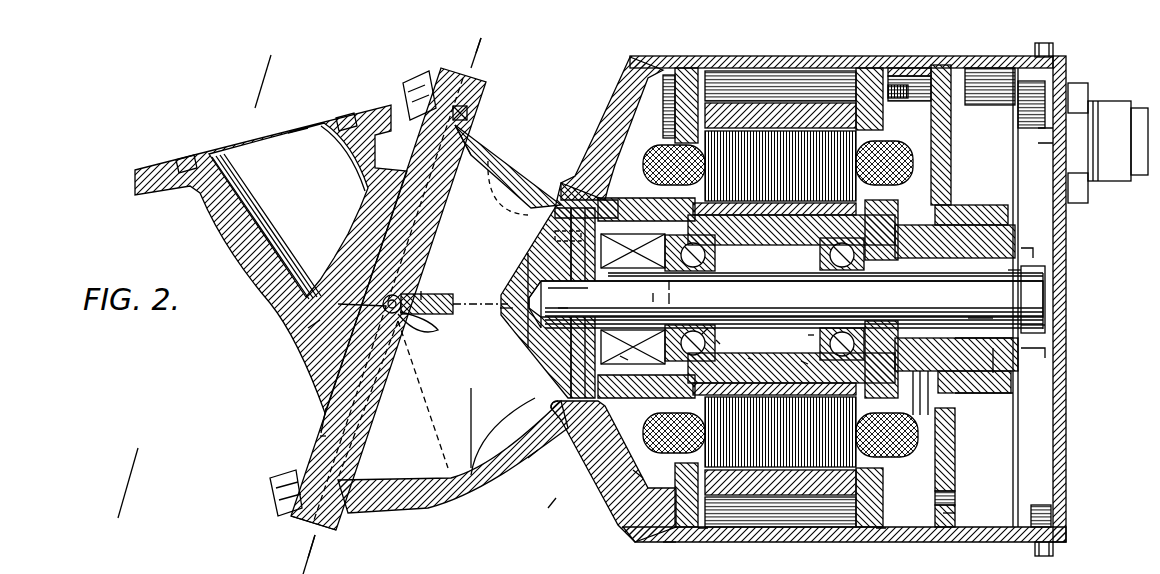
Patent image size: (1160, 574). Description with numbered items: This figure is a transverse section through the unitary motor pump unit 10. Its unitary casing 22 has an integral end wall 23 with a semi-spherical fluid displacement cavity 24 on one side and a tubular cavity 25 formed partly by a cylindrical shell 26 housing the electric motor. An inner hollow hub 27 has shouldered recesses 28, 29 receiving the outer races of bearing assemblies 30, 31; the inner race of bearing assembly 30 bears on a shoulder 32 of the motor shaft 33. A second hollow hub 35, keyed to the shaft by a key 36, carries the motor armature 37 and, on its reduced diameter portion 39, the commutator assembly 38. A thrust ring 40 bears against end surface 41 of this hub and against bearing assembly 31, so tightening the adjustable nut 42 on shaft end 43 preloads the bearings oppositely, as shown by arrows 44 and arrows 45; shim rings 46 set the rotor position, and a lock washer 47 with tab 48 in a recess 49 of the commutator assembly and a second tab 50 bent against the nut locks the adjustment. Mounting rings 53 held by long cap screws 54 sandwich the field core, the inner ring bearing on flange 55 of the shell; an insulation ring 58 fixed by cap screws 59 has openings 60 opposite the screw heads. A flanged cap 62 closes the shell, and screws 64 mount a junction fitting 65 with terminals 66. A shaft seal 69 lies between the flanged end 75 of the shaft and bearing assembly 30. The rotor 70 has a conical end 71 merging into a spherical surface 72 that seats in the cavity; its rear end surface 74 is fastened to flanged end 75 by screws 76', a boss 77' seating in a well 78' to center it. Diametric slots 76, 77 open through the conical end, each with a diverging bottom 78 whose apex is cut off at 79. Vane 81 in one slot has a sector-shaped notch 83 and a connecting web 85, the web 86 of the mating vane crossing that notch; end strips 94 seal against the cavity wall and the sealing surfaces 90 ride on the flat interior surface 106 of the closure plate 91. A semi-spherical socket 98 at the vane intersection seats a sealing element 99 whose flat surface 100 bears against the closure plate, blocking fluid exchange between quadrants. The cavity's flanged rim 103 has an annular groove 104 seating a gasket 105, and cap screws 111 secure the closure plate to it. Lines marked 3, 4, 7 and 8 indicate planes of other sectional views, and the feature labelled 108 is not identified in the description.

The section line 3- 3 is at (253, 58).
The section line 4- 4 is at (413, 292).
The section line 7- 7 is at (477, 45).
The section line 8- 8 is at (460, 50).
The unitary motor pump unit 10 is at (540, 507).
The unitary casing 22 is at (605, 496).
The end wall 23 is at (560, 413).
The semi-spherical fluid displacement cavity 24 is at (520, 450).
The tubular cavity 25 is at (630, 467).
The cylindrical shell 26 is at (780, 527).
The inner hollow hub 27 is at (750, 352).
The shouldered recess 28 is at (728, 340).
The shouldered recess 29 is at (794, 356).
The anti-friction bearing assembly 30 is at (667, 365).
The anti-friction bearing assembly 31 is at (798, 328).
The shoulder 32 is at (662, 277).
The motor shaft 33 is at (786, 301).
The second hollow hub 35 is at (802, 237).
The key 36 is at (960, 272).
The motor armature 37 is at (910, 447).
The motor commutator assembly 38 is at (984, 388).
The reduced diameter portion 39 is at (968, 312).
The thrust ring 40 is at (856, 317).
The end surface 41 is at (858, 376).
The adjustable nut 42 is at (1038, 317).
The shaft end 43 is at (1040, 291).
The arrows 44 is at (829, 260).
The arrows 45 is at (688, 335).
The shim rings 46 is at (662, 291).
The lock washer 47 is at (1013, 262).
The tab 48 is at (1038, 350).
The recess 49 is at (987, 347).
The second tab 50 is at (1027, 240).
The mounting rings 53 is at (690, 520).
The long cap screws 54 is at (750, 507).
The inwardly extending flange 55 is at (660, 535).
The insulation ring 58 is at (935, 131).
The cap screws 59 is at (908, 77).
The openings 60 is at (938, 505).
The flanged cap 62 is at (1060, 449).
The screws 64 is at (1082, 84).
The junction fitting 65 is at (1046, 39).
The terminals 66 is at (1030, 123).
The shaft seal 69 is at (660, 354).
The rotor 70 is at (513, 440).
The conical end 71 is at (428, 432).
The spherical surface 72 is at (480, 136).
The rear end surface 74 is at (543, 343).
The flanged end 75 is at (597, 188).
The diametric slot 76 is at (503, 436).
The screws 76' is at (633, 299).
The diametric slot 77 is at (520, 303).
The boss 77' is at (584, 285).
The slot bottom 78 is at (527, 303).
The well 78' is at (589, 303).
The cut-off apex 79 is at (492, 300).
The vane 81 is at (522, 178).
The sector-shaped notch 83 is at (398, 310).
The connecting web 85 is at (495, 322).
The connecting web 86 is at (407, 287).
The face edges 90 is at (333, 406).
The closure plate 91 is at (310, 428).
The bearing strips 94 is at (502, 168).
The semi-spherical socket 98 is at (395, 306).
The sealing element 99 is at (305, 320).
The flat diametric surface 100 is at (330, 296).
The flanged rim 103 is at (330, 518).
The annular groove 104 is at (340, 502).
The sealing gasket 105 is at (462, 100).
The interior surface 106 is at (340, 447).
The bracket flange 108 is at (292, 128).
The cap screws 111 is at (400, 73).